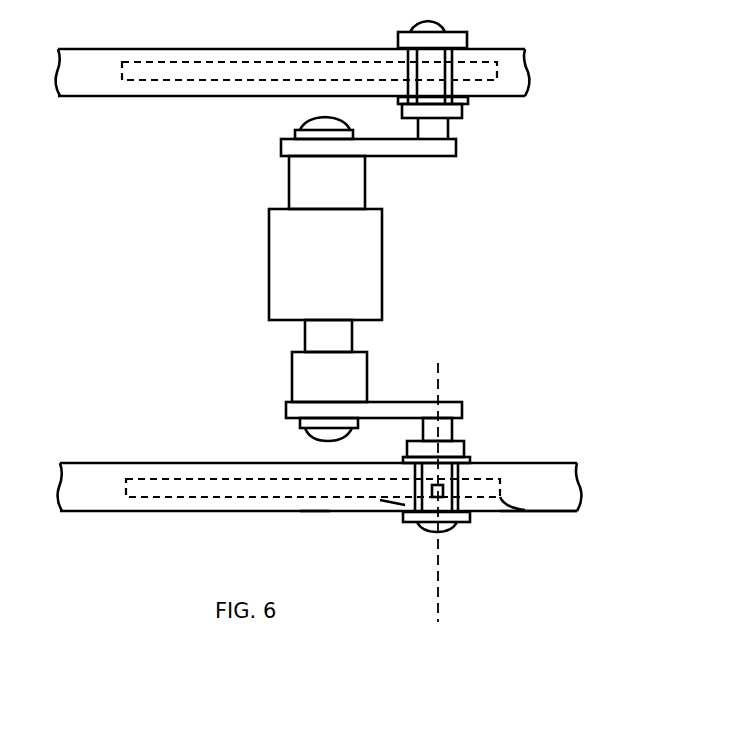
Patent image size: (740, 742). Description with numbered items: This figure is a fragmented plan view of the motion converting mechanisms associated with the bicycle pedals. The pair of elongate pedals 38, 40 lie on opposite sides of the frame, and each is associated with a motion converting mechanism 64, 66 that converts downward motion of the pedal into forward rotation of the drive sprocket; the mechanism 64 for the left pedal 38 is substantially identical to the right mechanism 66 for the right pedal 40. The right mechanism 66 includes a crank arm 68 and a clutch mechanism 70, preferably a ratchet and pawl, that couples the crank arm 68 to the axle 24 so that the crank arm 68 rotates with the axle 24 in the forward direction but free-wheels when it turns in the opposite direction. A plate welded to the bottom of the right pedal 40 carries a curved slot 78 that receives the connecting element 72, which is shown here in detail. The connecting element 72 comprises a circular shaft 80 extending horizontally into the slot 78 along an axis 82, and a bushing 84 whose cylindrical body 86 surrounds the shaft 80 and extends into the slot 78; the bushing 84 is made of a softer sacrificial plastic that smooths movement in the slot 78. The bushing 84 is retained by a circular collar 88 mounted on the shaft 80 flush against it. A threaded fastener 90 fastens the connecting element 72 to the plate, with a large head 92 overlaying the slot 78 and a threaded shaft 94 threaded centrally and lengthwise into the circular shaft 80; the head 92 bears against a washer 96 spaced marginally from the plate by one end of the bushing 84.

The left pedal 38 is at (106, 56).
The right pedal 40 is at (75, 473).
The motion converting mechanism 64 is at (470, 197).
The motion converting mechanism 66 is at (509, 345).
The axle 24 is at (366, 354).
The clutch mechanism 70 is at (292, 378).
The crank arm 68 is at (462, 406).
The circular shaft 80 is at (454, 432).
The circular collar 88 is at (409, 446).
The bushing 84 is at (474, 460).
The connecting element 72 is at (496, 548).
The cylindrical body 86 is at (365, 508).
The head 92 is at (457, 526).
The washer 96 is at (400, 520).
The threaded fastener 90 is at (425, 538).
The curved slot 78 is at (313, 507).
The threaded shaft 94 is at (523, 517).
The axis 82 is at (440, 612).